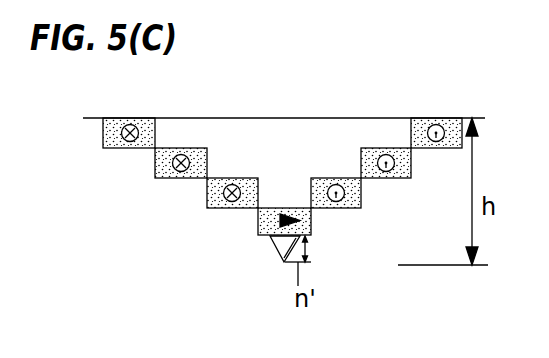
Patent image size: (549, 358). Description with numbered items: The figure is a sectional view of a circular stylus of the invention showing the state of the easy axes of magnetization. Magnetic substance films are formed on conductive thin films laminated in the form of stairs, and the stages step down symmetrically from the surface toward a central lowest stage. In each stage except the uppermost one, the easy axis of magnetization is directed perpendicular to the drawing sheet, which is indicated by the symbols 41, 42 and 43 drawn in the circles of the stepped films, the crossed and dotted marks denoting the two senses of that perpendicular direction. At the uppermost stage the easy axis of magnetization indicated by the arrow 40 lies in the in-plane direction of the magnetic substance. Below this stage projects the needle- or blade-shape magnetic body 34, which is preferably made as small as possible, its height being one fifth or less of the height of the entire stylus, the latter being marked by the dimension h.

The easy axis of magnetization arrow 41 is at (127, 118).
The easy axis of magnetization arrow 42 is at (170, 178).
The easy axis of magnetization arrow 43 is at (223, 208).
The easy axis of magnetization arrow at uppermost stage 40 is at (311, 235).
The needle- or blade-shape magnetic body 34 is at (274, 253).